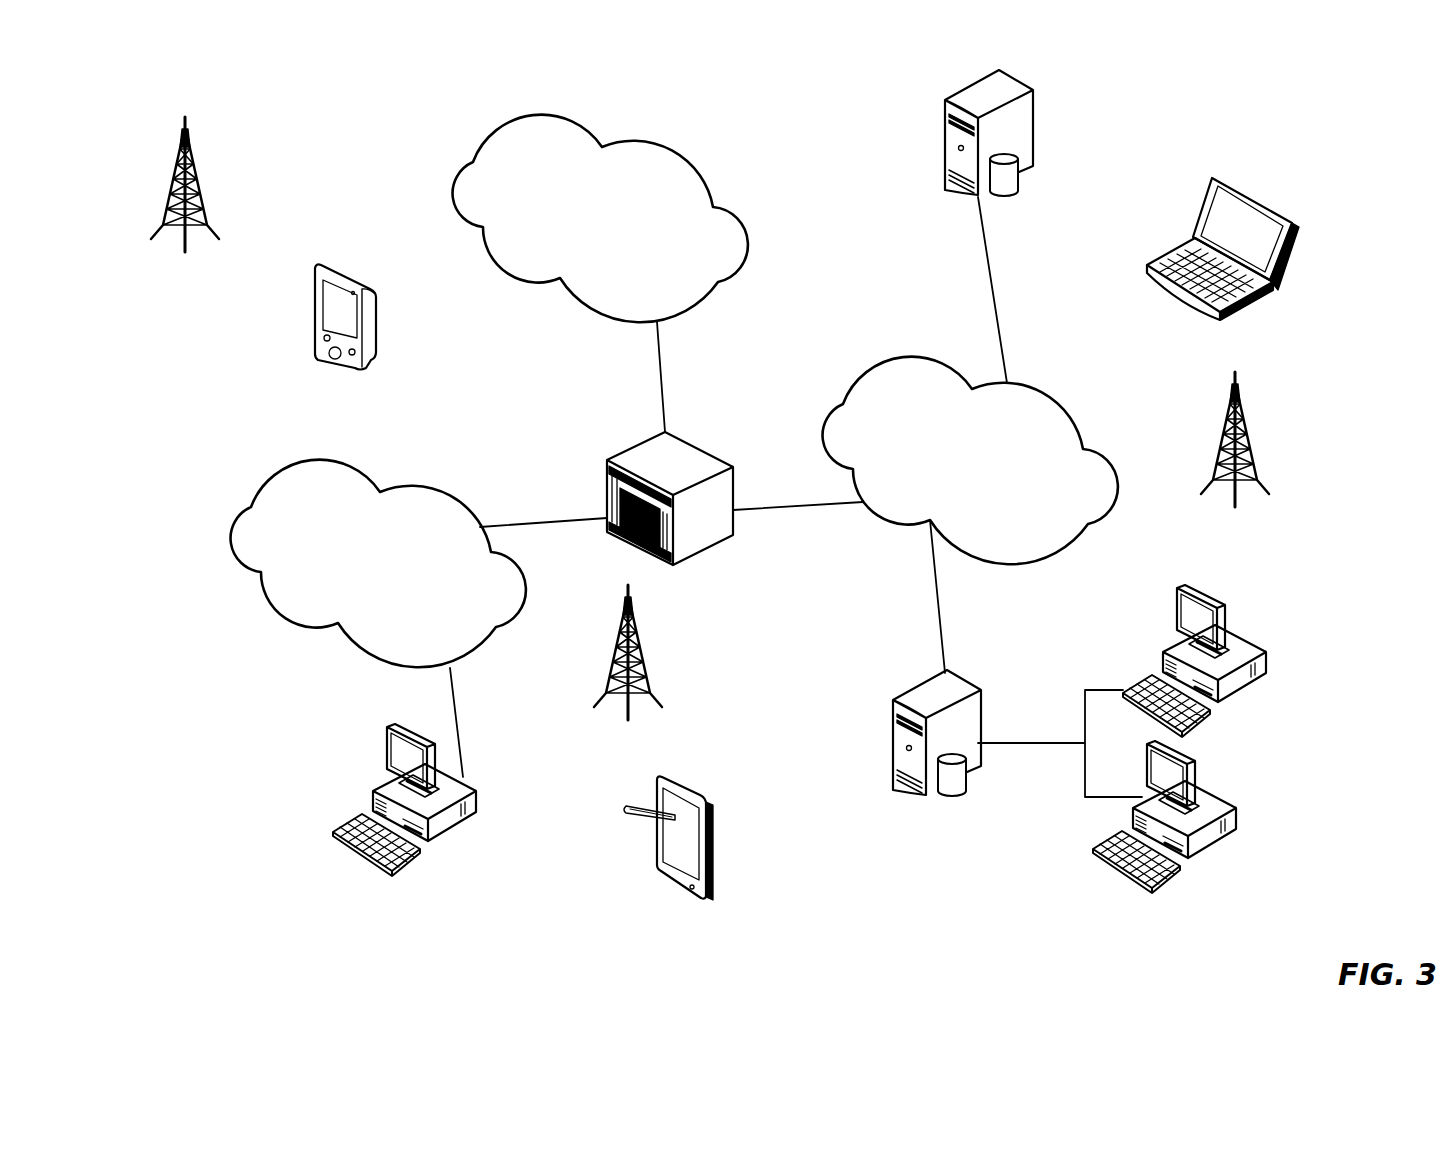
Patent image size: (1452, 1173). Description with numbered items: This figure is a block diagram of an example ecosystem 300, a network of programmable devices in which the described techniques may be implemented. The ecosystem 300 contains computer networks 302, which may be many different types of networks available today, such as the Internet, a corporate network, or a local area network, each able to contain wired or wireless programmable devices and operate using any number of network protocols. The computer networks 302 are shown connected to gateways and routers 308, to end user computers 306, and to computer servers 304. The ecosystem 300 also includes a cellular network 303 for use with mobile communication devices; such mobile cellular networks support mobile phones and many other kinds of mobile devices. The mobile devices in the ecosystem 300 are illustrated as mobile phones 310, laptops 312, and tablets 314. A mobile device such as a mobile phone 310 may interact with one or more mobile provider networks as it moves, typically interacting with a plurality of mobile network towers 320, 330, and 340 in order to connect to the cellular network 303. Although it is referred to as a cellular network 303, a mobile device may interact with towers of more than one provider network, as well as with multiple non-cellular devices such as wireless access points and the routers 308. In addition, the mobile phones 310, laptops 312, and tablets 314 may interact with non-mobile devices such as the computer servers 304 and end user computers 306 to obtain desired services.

The ecosystem 300 is at (1138, 160).
The computer networks 302 is at (425, 438).
The cellular network 303 is at (653, 150).
The computer servers 304 is at (893, 722).
The end user computers 306 is at (1300, 743).
The gateways and routers 308 is at (692, 445).
The mobile phones 310 is at (352, 270).
The laptops 312 is at (1267, 205).
The tablets 314 is at (700, 788).
The mobile network tower 320 is at (628, 671).
The mobile network tower 330 is at (1235, 457).
The mobile network tower 340 is at (185, 201).